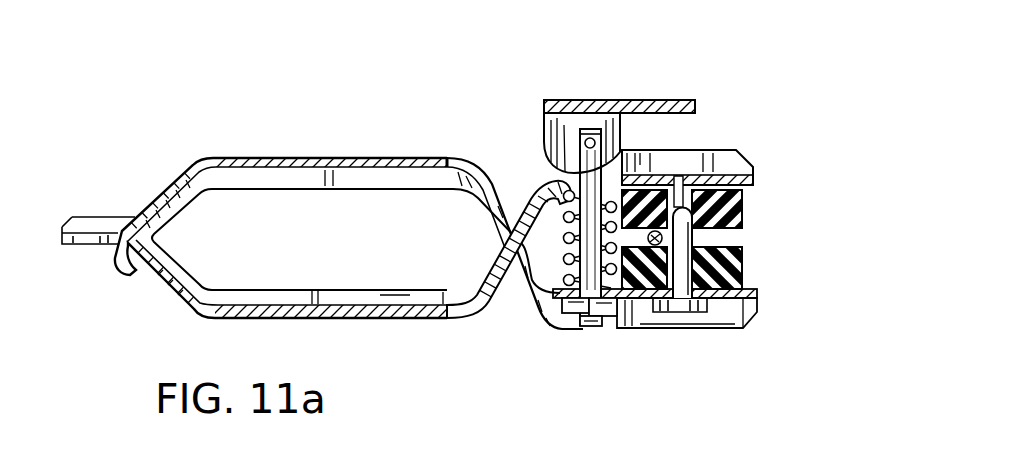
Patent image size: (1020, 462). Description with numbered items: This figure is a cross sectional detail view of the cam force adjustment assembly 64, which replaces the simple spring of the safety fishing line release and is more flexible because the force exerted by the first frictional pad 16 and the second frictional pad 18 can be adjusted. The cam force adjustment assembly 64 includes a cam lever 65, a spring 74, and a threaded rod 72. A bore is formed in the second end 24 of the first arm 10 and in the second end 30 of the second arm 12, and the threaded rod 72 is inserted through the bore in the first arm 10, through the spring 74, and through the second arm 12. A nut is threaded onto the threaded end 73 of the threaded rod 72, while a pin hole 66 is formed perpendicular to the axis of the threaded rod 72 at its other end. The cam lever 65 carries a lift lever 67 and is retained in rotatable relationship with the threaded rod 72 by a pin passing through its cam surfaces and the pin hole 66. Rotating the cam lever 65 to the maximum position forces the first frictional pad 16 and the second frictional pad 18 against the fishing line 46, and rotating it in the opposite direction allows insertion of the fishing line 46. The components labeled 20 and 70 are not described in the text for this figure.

The first arm 10 is at (440, 318).
The second arm 12 is at (448, 71).
The first frictional pad 16 is at (849, 175).
The second frictional pad 18 is at (852, 272).
The pin 20 is at (681, 193).
The second end of the first arm 24 is at (850, 114).
The second end of the second arm 30 is at (802, 352).
The fishing line 46 is at (653, 312).
The cam force adjustment assembly 64 is at (593, 96).
The cam lever 65 is at (657, 100).
The pin hole 66 is at (585, 141).
The lift lever 67 is at (697, 104).
The nut 70 is at (608, 318).
The threaded rod 72 is at (597, 325).
The threaded end 73 is at (574, 327).
The spring 74 is at (564, 194).